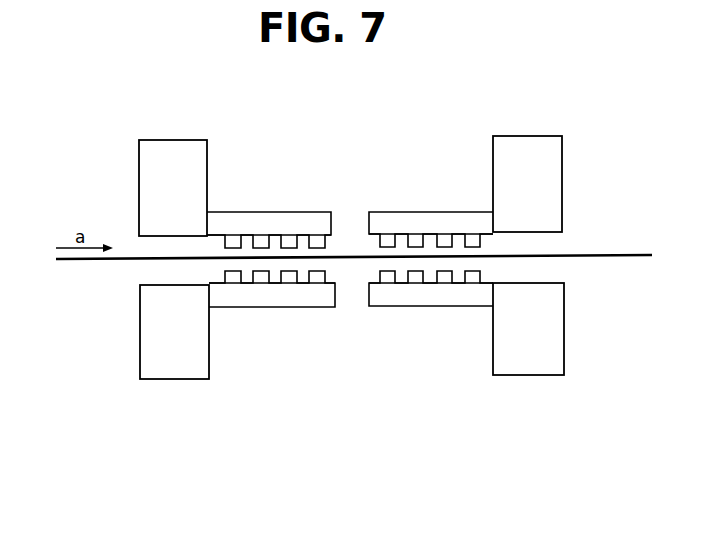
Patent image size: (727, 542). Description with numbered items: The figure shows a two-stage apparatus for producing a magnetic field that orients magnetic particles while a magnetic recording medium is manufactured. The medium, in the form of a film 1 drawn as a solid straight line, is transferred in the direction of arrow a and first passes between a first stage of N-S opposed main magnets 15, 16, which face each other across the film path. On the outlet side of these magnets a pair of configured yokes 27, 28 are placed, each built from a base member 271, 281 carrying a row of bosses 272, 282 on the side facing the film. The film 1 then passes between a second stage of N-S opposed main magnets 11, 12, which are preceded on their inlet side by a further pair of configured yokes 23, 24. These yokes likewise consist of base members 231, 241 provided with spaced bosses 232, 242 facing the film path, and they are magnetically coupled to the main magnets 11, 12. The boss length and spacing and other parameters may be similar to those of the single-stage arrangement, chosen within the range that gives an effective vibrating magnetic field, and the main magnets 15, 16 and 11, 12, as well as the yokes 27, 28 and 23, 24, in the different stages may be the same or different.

The film 1 is at (628, 252).
The main magnet 11 is at (555, 330).
The main magnet 12 is at (550, 174).
The main magnet 15 is at (143, 350).
The main magnet 16 is at (143, 190).
The yoke 23 is at (413, 343).
The base member 231 is at (465, 298).
The boss 232 is at (385, 277).
The yoke 24 is at (427, 159).
The base member 241 is at (467, 217).
The boss 242 is at (380, 243).
The yoke 27 is at (272, 352).
The base member 271 is at (230, 300).
The boss 272 is at (298, 278).
The yoke 28 is at (276, 169).
The base member 281 is at (243, 217).
The boss 282 is at (318, 240).